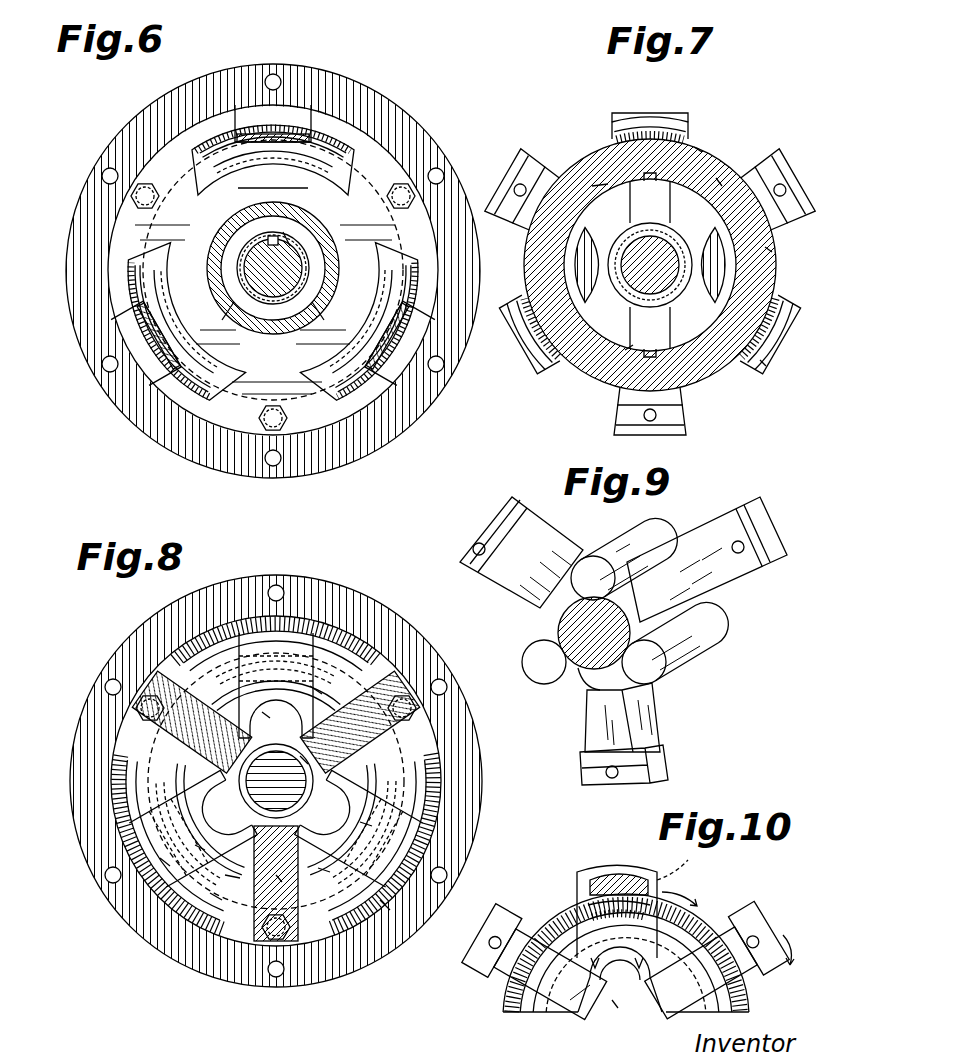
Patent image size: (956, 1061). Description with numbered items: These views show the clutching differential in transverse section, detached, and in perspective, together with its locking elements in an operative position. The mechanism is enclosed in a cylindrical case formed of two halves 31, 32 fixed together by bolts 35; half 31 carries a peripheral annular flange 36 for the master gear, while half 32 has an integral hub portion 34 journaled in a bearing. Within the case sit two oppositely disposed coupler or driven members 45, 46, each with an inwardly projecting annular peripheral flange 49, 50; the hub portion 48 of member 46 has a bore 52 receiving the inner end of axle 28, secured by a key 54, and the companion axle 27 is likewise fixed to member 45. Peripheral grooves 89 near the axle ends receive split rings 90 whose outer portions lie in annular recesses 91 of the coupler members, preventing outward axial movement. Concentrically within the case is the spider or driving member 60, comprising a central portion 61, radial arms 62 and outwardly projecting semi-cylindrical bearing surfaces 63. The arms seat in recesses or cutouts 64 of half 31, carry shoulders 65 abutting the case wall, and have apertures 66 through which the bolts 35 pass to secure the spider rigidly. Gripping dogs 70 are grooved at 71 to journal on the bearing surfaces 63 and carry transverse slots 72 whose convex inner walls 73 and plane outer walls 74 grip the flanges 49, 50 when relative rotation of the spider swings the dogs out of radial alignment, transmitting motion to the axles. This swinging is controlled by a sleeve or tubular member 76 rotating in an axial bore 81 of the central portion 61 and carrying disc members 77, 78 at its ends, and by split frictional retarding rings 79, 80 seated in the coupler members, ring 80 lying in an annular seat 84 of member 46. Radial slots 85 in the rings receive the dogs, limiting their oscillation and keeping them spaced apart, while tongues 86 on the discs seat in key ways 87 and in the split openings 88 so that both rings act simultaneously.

In FIG. 8, the rear axle or shaft 27 is at (276, 781).
In FIG. 6, the rear axle or shaft 28 is at (254, 249).
In FIG. 7, the rear axle or shaft 28 is at (650, 265).
In FIG. 6, the half of the differential case 31 is at (292, 104).
In FIG. 8, the half of the differential case 31 is at (128, 757).
In FIG. 6, the half of the differential case 32 is at (236, 406).
In FIG. 6, the hub portion 34 is at (242, 308).
In FIG. 6, the bolts 35 is at (408, 188).
In FIG. 8, the bolts 35 is at (406, 704).
In FIG. 6, the peripheral annular flange 36 is at (385, 128).
In FIG. 8, the peripheral annular flange 36 is at (223, 597).
In FIG. 8, the coupler or driven member 45 is at (147, 799).
In FIG. 10, the coupler or driven member 45 is at (552, 1014).
In FIG. 6, the coupler or driven member 46 is at (390, 377).
In FIG. 7, the coupler or driven member 46 is at (716, 152).
In FIG. 6, the hub portion 48 is at (271, 317).
In FIG. 8, the annular peripheral flange 49 is at (216, 898).
In FIG. 10, the annular peripheral flange 49 is at (512, 1003).
In FIG. 7, the annular peripheral flange 50 is at (583, 380).
In FIG. 6, the bore 52 is at (300, 251).
In FIG. 6, the key 54 is at (225, 262).
In FIG. 9, the spider or driving member 60 is at (614, 640).
In FIG. 10, the spider or driving member 60 is at (581, 1016).
In FIG. 9, the central portion 61 is at (574, 611).
In FIG. 10, the central portion 61 is at (645, 1008).
In FIG. 7, the radial arms 62 is at (514, 206).
In FIG. 8, the radial arms 62 is at (160, 694).
In FIG. 9, the radial arms 62 is at (614, 640).
In FIG. 10, the radial arms 62 is at (622, 942).
In FIG. 7, the semi-cylindrical bearing surfaces 63 is at (588, 298).
In FIG. 8, the semi-cylindrical bearing surfaces 63 is at (271, 703).
In FIG. 9, the semi-cylindrical bearing surfaces 63 is at (630, 550).
In FIG. 10, the semi-cylindrical bearing surfaces 63 is at (622, 1013).
In FIG. 8, the recesses or cutouts 64 is at (168, 672).
In FIG. 7, the shoulders 65 is at (538, 178).
In FIG. 9, the shoulders 65 is at (533, 510).
In FIG. 10, the shoulders 65 is at (507, 918).
In FIG. 7, the apertures 66 is at (776, 191).
In FIG. 9, the apertures 66 is at (474, 544).
In FIG. 10, the apertures 66 is at (492, 937).
In FIG. 6, the gripping dogs 70 is at (256, 133).
In FIG. 7, the gripping dogs 70 is at (641, 113).
In FIG. 8, the gripping dogs 70 is at (283, 636).
In FIG. 10, the gripping dogs 70 is at (636, 862).
In FIG. 7, the recess or groove 71 is at (720, 178).
In FIG. 8, the recess or groove 71 is at (287, 835).
In FIG. 6, the transverse slots 72 is at (318, 140).
In FIG. 7, the transverse slots 72 is at (668, 149).
In FIG. 10, the transverse slots 72 is at (660, 888).
In FIG. 6, the inner walls 73 is at (211, 322).
In FIG. 10, the inner walls 73 is at (619, 894).
In FIG. 6, the outer walls 74 is at (246, 140).
In FIG. 7, the outer walls 74 is at (662, 132).
In FIG. 8, the outer walls 74 is at (164, 862).
In FIG. 10, the outer walls 74 is at (640, 880).
In FIG. 8, the sleeve or tubular member 76 is at (269, 818).
In FIG. 10, the sleeve or tubular member 76 is at (598, 1012).
In FIG. 10, the disc member 77 is at (676, 1014).
In FIG. 7, the disc member 78 is at (650, 244).
In FIG. 8, the split frictional retarding ring 79 is at (386, 906).
In FIG. 10, the split frictional retarding ring 79 is at (533, 1016).
In FIG. 7, the split frictional retarding ring 80 is at (708, 300).
In FIG. 8, the bore 81 is at (306, 762).
In FIG. 9, the bore 81 is at (580, 672).
In FIG. 10, the bore 81 is at (623, 983).
In FIG. 7, the annular seat 84 is at (600, 185).
In FIG. 8, the annular seat 84 is at (239, 887).
In FIG. 10, the annular seat 84 is at (598, 985).
In FIG. 7, the radial slots or recesses 85 is at (772, 252).
In FIG. 8, the radial slots or recesses 85 is at (234, 705).
In FIG. 10, the radial slots or recesses 85 is at (590, 960).
In FIG. 7, the tongues 86 is at (650, 176).
In FIG. 8, the tongues 86 is at (276, 809).
In FIG. 10, the tongues 86 is at (630, 958).
In FIG. 7, the grooves or key ways 87 is at (633, 352).
In FIG. 8, the grooves or key ways 87 is at (328, 880).
In FIG. 7, the openings 88 is at (698, 147).
In FIG. 8, the openings 88 is at (318, 691).
In FIG. 10, the openings 88 is at (621, 904).
In FIG. 6, the peripheral grooves 89 is at (273, 270).
In FIG. 6, the split rings 90 is at (286, 240).
In FIG. 7, the split rings 90 is at (650, 328).
In FIG. 6, the annular recesses 91 is at (262, 190).